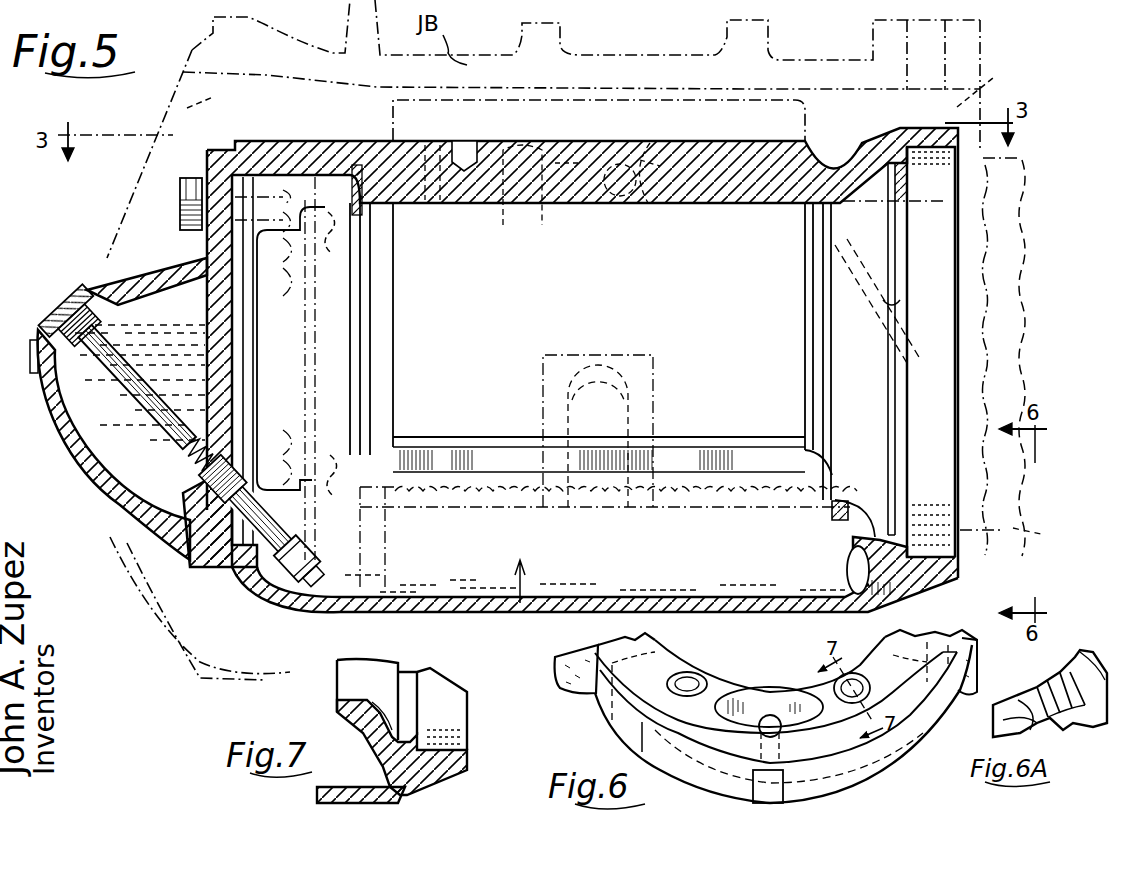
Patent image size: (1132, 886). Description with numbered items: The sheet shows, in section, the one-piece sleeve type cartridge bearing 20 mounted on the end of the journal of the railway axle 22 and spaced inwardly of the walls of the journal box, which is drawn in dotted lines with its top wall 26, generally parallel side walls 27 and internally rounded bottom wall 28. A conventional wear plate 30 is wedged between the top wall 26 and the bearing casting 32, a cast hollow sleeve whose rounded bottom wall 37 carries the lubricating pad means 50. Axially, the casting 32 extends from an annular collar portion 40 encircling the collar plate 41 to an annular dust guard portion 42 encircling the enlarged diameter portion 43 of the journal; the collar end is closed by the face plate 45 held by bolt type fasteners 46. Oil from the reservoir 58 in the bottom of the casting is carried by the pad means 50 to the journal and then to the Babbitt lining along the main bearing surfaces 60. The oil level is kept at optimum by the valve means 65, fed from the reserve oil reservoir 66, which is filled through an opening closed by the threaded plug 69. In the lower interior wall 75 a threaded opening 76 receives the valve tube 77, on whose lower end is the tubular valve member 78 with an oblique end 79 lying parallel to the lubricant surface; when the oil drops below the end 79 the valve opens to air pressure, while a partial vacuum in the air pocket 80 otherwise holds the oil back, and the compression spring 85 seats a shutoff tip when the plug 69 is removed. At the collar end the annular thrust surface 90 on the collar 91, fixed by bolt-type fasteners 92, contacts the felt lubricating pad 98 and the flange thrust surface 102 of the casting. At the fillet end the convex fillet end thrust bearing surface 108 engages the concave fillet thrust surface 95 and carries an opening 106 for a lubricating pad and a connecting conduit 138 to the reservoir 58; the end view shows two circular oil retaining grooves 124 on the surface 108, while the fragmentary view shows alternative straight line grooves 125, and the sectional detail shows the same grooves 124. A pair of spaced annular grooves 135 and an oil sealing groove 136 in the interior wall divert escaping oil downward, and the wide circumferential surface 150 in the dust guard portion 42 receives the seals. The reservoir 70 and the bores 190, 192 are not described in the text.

In FIG. 5, the cartridge bearing 20 is at (128, 200).
In FIG. 5, the railway axle 22 is at (1046, 535).
In FIG. 5, the top wall 26 is at (784, 72).
In FIG. 5, the side walls 27 is at (186, 112).
In FIG. 5, the bottom wall 28 is at (268, 679).
In FIG. 5, the wear plate 30 is at (615, 102).
In FIG. 5, the bearing casting 32 is at (684, 146).
In FIG. 5, the bottom wall 37 is at (412, 607).
In FIG. 7, the bottom wall 37 is at (350, 787).
In FIG. 5, the collar portion 40 is at (274, 141).
In FIG. 5, the collar plate 41 is at (322, 380).
In FIG. 5, the dust guard portion 42 is at (925, 137).
In FIG. 5, the enlarged diameter portion 43 is at (967, 178).
In FIG. 5, the face plate 45 is at (160, 277).
In FIG. 5, the bolt type fasteners 46 is at (182, 197).
In FIG. 5, the lubricating pad means 50 is at (523, 612).
In FIG. 5, the reservoir 58 is at (347, 586).
In FIG. 5, the main bearing surfaces 60 is at (598, 282).
In FIG. 5, the valve means 65 is at (183, 473).
In FIG. 5, the reserve oil reservoir 66 is at (90, 403).
In FIG. 5, the threaded plug 69 is at (48, 305).
In FIG. 5, the reservoir 70 is at (88, 468).
In FIG. 5, the lower interior wall 75 is at (192, 515).
In FIG. 5, the threaded opening 76 is at (210, 455).
In FIG. 5, the valve tube 77 is at (238, 511).
In FIG. 5, the valve member 78 is at (285, 556).
In FIG. 5, the oblique end 79 is at (306, 600).
In FIG. 5, the air pocket 80 is at (167, 315).
In FIG. 5, the compression spring 85 is at (176, 458).
In FIG. 5, the thrust surface 90 is at (330, 353).
In FIG. 5, the collar 91 is at (354, 430).
In FIG. 5, the bolt-type fasteners 92 is at (264, 337).
In FIG. 5, the fillet thrust surface 95 is at (897, 214).
In FIG. 5, the felt lubricating pad 98 is at (388, 551).
In FIG. 5, the thrust surface 102 is at (368, 163).
In FIG. 5, the opening 106 is at (850, 500).
In FIG. 6, the opening 106 is at (738, 703).
In FIG. 5, the fillet end thrust bearing surface 108 is at (855, 210).
In FIG. 6, the fillet end thrust bearing surface 108 is at (660, 662).
In FIG. 6A, the fillet end thrust bearing surface 108 is at (1085, 660).
In FIG. 7, the oil retaining grooves 124 is at (380, 698).
In FIG. 6, the oil retaining grooves 124 is at (697, 686).
In FIG. 6A, the straight line grooves 125 is at (1072, 728).
In FIG. 5, the annular grooves 135 is at (808, 290).
In FIG. 5, the oil sealing groove 136 is at (893, 296).
In FIG. 7, the oil sealing groove 136 is at (405, 713).
In FIG. 5, the connecting conduit 138 is at (846, 571).
In FIG. 6, the connecting conduit 138 is at (768, 745).
In FIG. 5, the circumferential surface 150 is at (947, 263).
In FIG. 7, the circumferential surface 150 is at (440, 743).
In FIG. 5, the bore 190 is at (607, 157).
In FIG. 5, the bore 192 is at (805, 226).